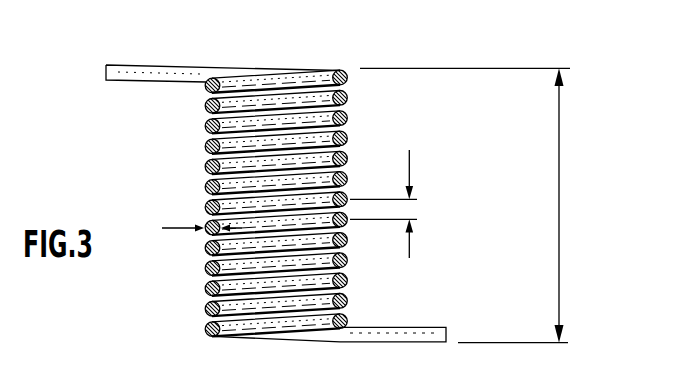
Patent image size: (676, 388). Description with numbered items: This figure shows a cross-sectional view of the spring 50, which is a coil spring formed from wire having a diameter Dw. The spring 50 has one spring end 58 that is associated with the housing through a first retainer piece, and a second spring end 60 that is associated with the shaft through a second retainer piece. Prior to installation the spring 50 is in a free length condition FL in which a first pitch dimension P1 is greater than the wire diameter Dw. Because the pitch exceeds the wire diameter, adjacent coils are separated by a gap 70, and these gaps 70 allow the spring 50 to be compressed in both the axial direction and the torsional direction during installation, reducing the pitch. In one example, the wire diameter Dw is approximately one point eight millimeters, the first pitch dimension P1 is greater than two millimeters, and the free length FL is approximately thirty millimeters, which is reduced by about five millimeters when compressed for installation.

The spring 50 is at (289, 204).
The spring end 58 is at (119, 70).
The second spring end 60 is at (430, 344).
The gap 70 is at (204, 321).
The wire diameter DW is at (187, 229).
The first pitch dimension P1 is at (409, 172).
The free length FL is at (559, 285).